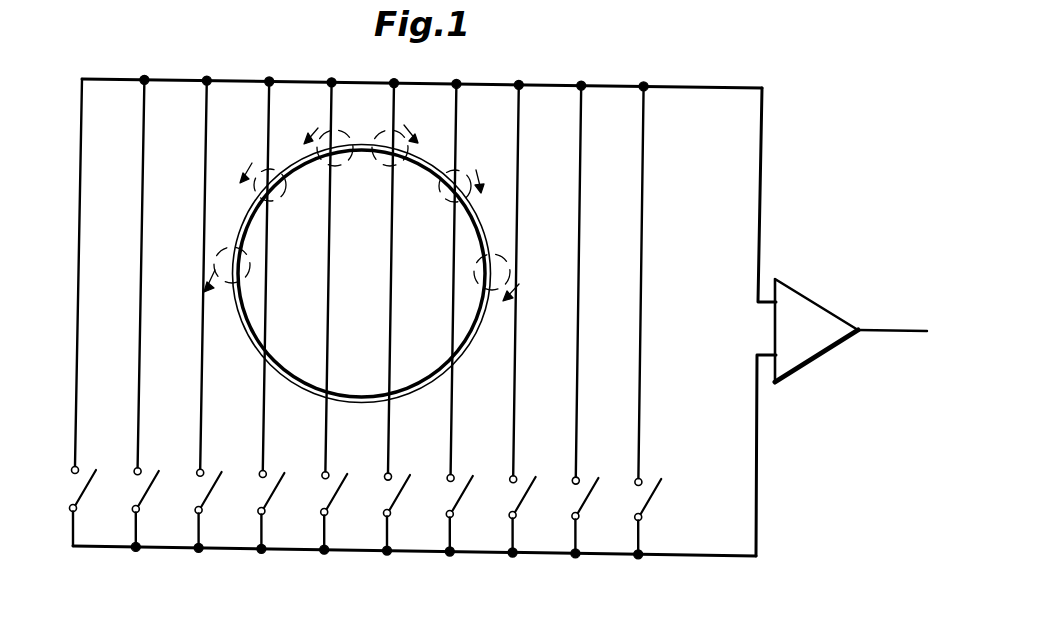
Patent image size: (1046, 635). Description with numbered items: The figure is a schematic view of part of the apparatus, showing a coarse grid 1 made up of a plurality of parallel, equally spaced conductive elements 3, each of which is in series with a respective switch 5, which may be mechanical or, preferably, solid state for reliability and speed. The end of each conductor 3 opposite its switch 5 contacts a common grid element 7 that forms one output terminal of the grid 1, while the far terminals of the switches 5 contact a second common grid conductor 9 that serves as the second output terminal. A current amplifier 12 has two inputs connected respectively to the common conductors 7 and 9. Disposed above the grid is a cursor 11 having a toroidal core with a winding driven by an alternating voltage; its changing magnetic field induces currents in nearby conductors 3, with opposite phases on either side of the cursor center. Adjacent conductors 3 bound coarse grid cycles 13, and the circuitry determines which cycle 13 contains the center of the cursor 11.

The coarse grid 1 is at (572, 79).
The conductive elements 3 is at (78, 238).
The switch 5 is at (71, 507).
The common grid element 7 is at (693, 86).
The second common grid conductor 9 is at (686, 557).
The cursor 11 is at (457, 357).
The current amplifier 12 is at (815, 300).
The coarse grid cycles 13 is at (120, 365).